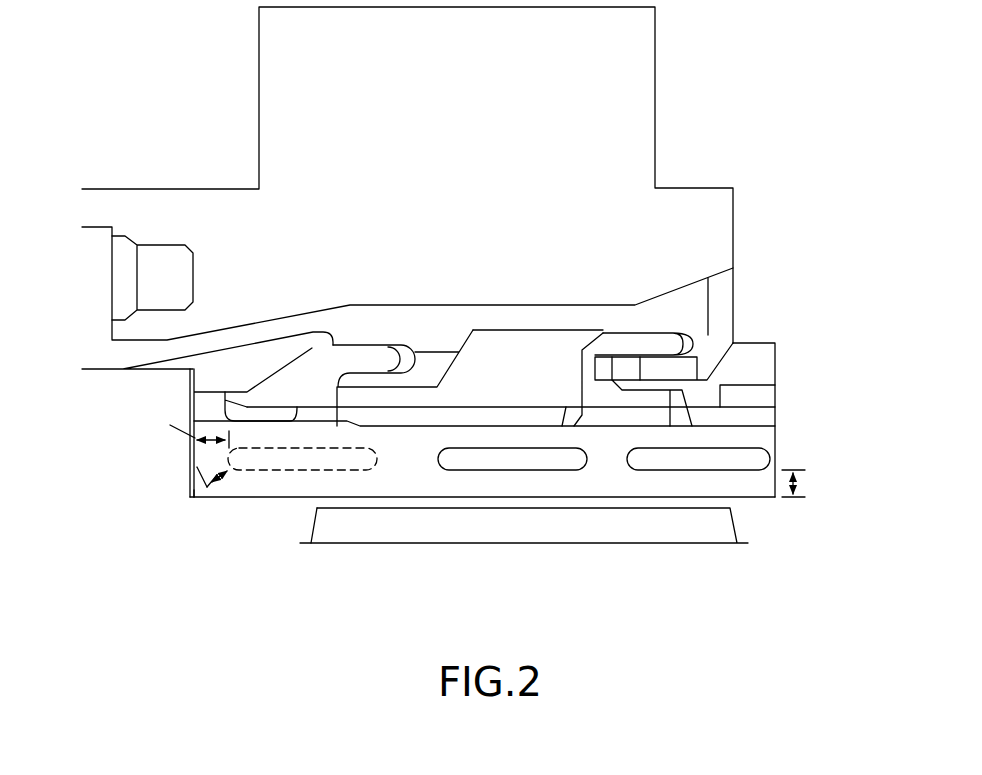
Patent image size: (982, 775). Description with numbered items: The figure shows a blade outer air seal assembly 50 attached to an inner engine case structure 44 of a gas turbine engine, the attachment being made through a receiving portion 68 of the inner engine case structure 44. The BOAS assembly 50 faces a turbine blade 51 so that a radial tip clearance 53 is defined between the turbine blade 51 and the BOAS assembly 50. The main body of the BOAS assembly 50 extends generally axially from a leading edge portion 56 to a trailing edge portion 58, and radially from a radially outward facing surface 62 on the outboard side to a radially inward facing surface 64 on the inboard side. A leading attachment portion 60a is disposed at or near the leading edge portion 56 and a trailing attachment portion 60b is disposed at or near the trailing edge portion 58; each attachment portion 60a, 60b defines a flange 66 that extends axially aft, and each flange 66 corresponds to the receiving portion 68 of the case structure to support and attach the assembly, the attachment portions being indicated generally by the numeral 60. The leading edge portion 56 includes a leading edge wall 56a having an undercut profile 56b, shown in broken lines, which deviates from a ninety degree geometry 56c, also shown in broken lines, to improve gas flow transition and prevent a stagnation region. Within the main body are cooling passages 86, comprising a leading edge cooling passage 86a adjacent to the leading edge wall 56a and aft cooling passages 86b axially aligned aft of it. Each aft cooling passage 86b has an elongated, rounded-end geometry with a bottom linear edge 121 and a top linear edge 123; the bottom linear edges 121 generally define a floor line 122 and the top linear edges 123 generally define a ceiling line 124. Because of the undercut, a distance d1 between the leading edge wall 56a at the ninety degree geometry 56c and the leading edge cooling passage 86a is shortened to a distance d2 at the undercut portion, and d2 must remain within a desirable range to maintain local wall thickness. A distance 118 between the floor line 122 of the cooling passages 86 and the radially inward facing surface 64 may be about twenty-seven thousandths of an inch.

The inner engine case structure 44 is at (513, 317).
The blade outer air seal (BOAS) assembly 50 is at (767, 438).
The turbine blade 51 is at (732, 517).
The radial tip clearance 53 is at (320, 503).
The leading edge portion 56 is at (183, 455).
The leading edge wall 56a is at (193, 465).
The undercut profile 56b is at (195, 482).
The 90 degree geometry 56c is at (207, 500).
The trailing edge portion 58 is at (785, 452).
The sealing lip 60 is at (336, 371).
The leading attachment portion 60a is at (355, 360).
The trailing attachment portion 60b is at (637, 345).
The radially outward facing surface 62 is at (475, 436).
The radially inward facing surface 64 is at (497, 497).
The flange 66 is at (372, 360).
The receiving portion 68 is at (437, 347).
The cooling passages 86 is at (352, 449).
The leading edge cooling passage 86a is at (337, 470).
The aft cooling passages 86b is at (653, 472).
The distance 118 is at (793, 480).
The bottom linear edge 121 is at (290, 470).
The floor line 122 is at (412, 470).
The top linear edge 123 is at (263, 447).
The ceiling line 124 is at (413, 448).
The distance d1 is at (188, 425).
The distance d2 is at (227, 498).